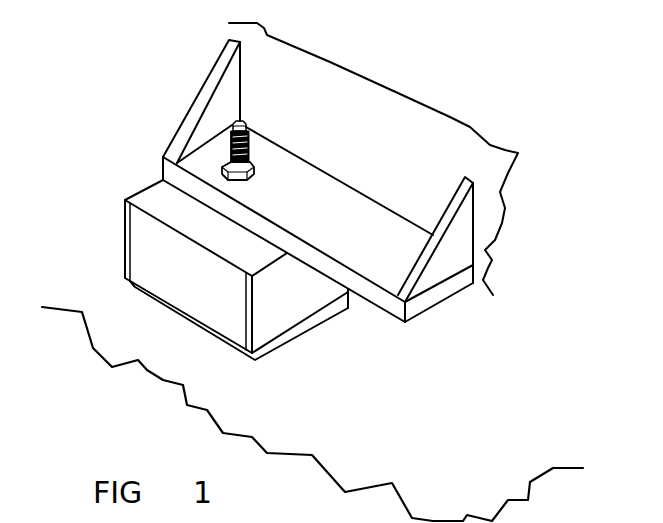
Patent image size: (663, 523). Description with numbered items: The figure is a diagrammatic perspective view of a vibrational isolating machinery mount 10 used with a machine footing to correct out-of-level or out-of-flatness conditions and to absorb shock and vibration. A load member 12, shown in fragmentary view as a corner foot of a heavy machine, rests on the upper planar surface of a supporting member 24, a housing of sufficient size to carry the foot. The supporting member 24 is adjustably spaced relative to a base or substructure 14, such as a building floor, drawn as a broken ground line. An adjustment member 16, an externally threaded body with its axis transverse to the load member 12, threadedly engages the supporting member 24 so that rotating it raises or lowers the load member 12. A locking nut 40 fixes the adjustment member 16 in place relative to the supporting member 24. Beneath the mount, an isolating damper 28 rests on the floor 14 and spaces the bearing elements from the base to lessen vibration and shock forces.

The machinery mount 10 is at (113, 212).
The load member 12 is at (195, 107).
The base or substructure 14 is at (147, 370).
The adjustment member 16 is at (257, 116).
The supporting member 24 is at (125, 248).
The isolating damper 28 is at (322, 348).
The locking nut 40 is at (255, 171).